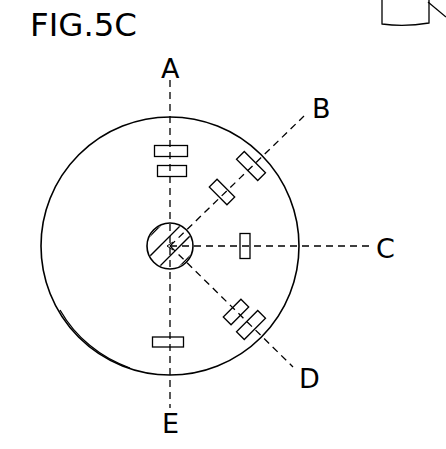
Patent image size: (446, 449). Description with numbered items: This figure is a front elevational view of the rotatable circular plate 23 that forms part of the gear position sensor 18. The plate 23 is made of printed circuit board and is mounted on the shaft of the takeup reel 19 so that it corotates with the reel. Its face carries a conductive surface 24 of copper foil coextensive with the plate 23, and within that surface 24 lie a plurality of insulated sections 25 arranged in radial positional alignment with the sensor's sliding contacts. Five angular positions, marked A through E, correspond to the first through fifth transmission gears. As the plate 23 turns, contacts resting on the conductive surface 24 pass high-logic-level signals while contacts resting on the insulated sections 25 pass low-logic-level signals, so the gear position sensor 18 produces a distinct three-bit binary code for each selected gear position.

The gear position sensor 18 is at (320, 0).
The takeup reel 19 is at (148, 257).
The rotatable circular plate 23 is at (77, 152).
The conductive surface 24 is at (105, 343).
The insulated sections 25 is at (178, 146).